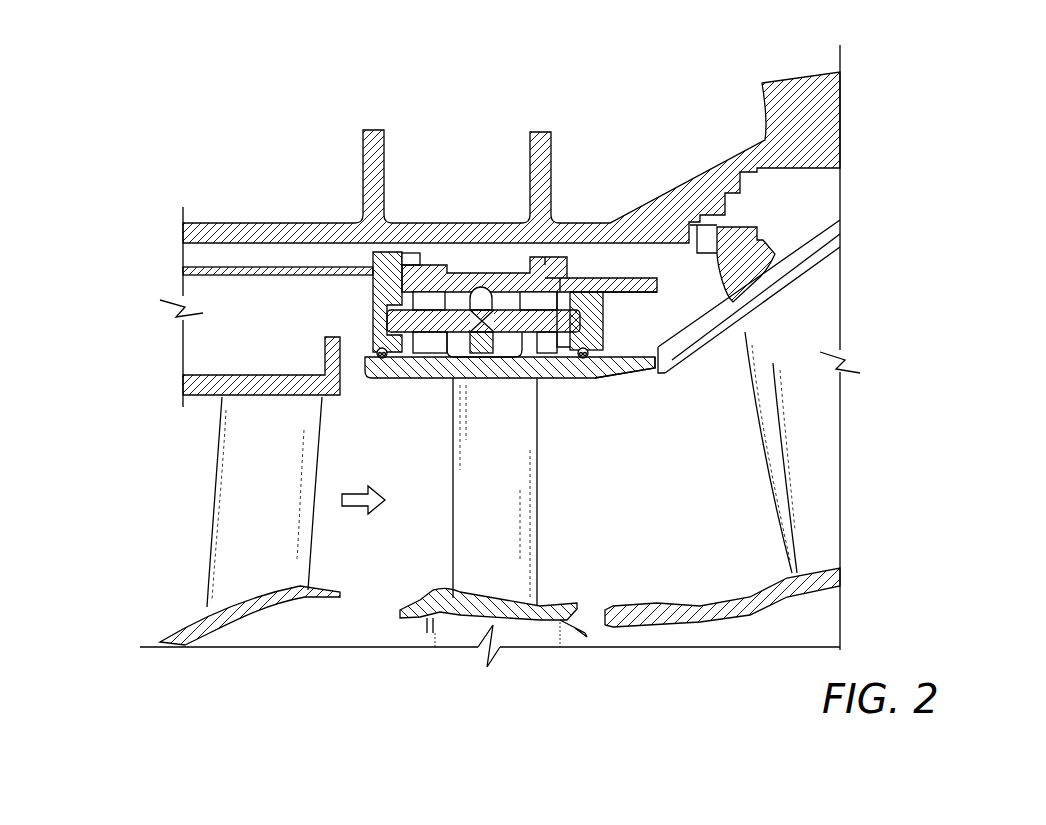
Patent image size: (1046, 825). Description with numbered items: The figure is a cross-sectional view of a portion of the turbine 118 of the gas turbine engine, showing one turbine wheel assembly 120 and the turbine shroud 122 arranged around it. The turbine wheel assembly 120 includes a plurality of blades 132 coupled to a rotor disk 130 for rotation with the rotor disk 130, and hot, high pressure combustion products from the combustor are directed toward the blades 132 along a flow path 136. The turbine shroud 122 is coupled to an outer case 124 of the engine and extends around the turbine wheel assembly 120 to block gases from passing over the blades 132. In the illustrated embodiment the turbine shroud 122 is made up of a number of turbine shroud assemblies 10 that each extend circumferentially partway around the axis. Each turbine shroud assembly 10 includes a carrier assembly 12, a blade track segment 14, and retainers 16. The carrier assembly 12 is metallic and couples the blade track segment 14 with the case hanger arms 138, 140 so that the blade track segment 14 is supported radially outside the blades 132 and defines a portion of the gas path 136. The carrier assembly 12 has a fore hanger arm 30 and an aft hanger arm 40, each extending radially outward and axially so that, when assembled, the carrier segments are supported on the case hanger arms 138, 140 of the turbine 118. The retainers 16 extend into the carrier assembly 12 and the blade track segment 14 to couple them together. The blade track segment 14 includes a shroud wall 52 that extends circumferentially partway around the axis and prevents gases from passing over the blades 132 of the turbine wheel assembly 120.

The turbine 118 is at (150, 139).
The outer case 124 is at (355, 214).
The carrier assembly 12 is at (474, 266).
The case hanger arm 138 is at (410, 262).
The fore hanger arm 30 is at (403, 262).
The aft hanger arm 40 is at (552, 262).
The case hanger arm 140 is at (548, 277).
The turbine shroud assembly 10 is at (617, 265).
The turbine shroud 122 is at (652, 262).
The retainer 16 is at (384, 321).
The blade track segment 14 is at (445, 383).
The shroud wall 52 is at (601, 385).
The flow path 136 is at (382, 484).
The blade 132 is at (537, 543).
The turbine wheel assembly 120 is at (366, 550).
The rotor disk 130 is at (427, 628).